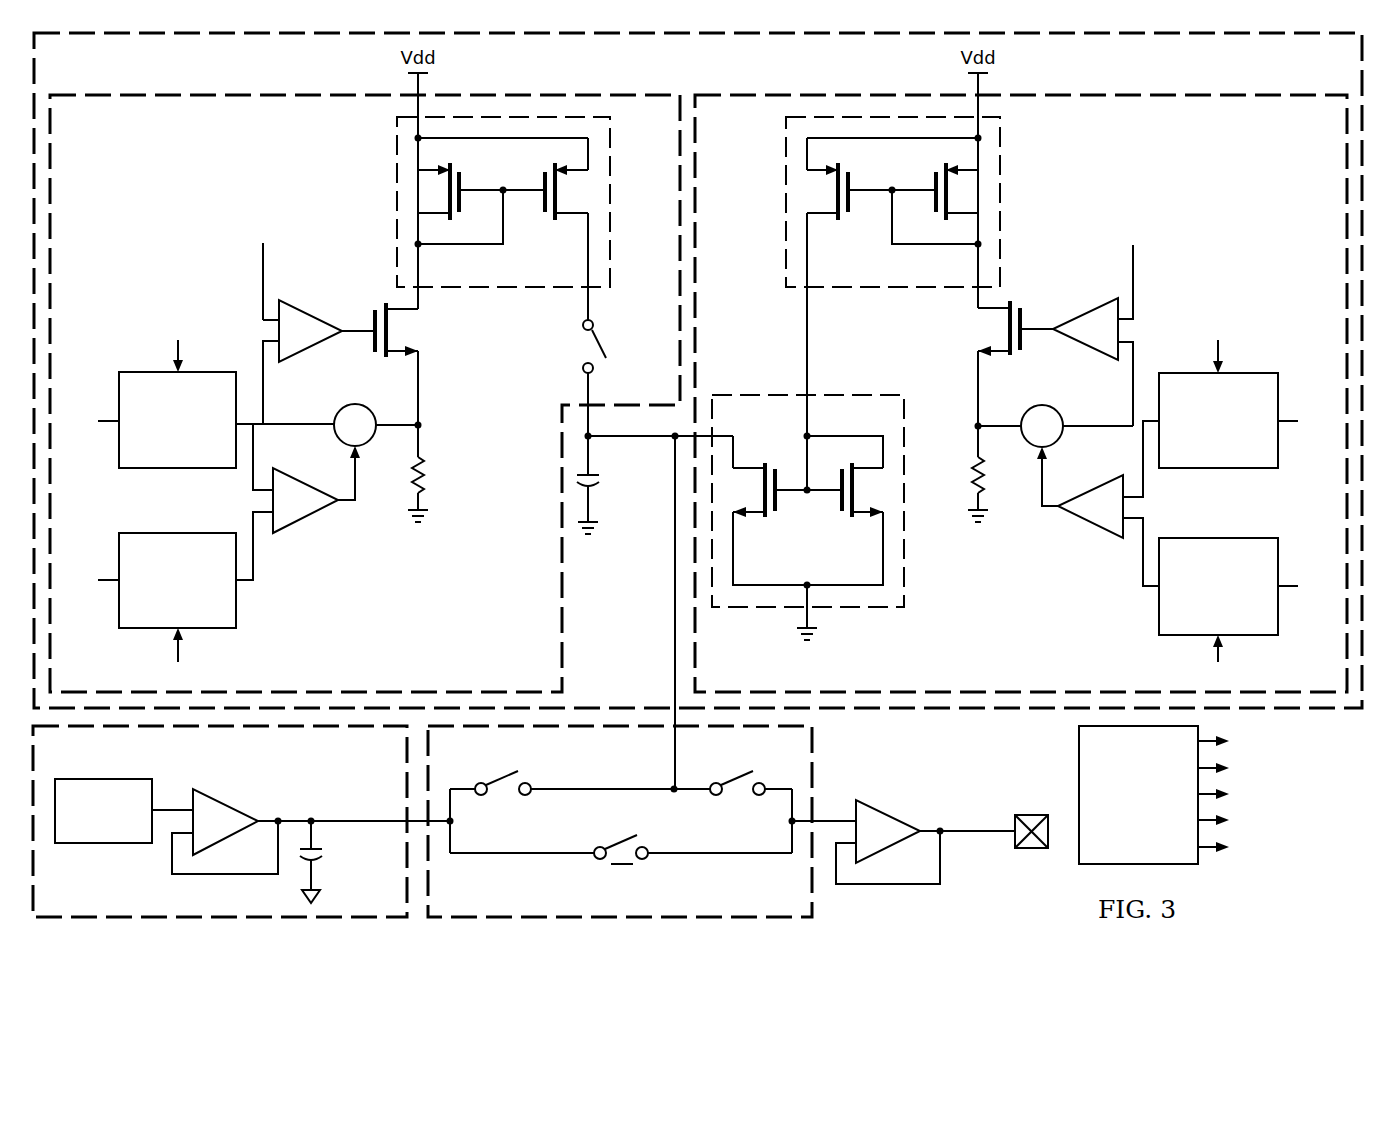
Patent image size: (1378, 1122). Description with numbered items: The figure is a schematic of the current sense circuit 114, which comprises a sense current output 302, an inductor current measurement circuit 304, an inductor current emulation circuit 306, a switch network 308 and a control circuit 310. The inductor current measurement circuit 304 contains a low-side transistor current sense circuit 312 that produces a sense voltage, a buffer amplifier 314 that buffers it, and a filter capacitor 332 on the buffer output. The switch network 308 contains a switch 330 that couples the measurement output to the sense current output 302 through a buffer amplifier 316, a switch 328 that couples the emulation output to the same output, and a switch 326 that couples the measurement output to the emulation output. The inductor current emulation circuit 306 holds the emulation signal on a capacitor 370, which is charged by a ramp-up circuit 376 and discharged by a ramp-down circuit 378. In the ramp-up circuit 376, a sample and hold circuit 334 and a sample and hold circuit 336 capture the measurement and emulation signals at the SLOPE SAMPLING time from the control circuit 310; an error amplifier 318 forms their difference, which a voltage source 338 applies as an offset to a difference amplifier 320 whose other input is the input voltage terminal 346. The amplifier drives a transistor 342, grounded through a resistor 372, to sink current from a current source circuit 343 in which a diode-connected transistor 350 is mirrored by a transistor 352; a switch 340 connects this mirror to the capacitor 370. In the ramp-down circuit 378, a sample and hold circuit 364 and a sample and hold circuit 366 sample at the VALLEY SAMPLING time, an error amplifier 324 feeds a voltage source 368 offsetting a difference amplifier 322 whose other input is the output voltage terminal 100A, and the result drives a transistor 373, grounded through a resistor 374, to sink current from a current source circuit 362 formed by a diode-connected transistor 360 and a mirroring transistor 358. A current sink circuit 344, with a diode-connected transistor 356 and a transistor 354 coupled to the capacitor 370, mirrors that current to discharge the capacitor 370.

The output voltage terminal 100A is at (1137, 263).
The current sense circuit 114 is at (1330, 877).
The sense current output 302 is at (1033, 812).
The inductor current measurement circuit 304 is at (84, 765).
The inductor current emulation circuit 306 is at (681, 76).
The switch network 308 is at (820, 755).
The control circuit 310 is at (1119, 835).
The low-side transistor current sense circuit 312 is at (105, 845).
The buffer amplifier 314 is at (228, 803).
The buffer amplifier 316 is at (890, 810).
The error amplifier 318 is at (307, 518).
The difference amplifier 320 is at (313, 307).
The difference amplifier 322 is at (1085, 312).
The error amplifier 324 is at (1090, 520).
The switch 326 is at (502, 778).
The switch 328 is at (736, 778).
The switch 330 is at (618, 840).
The filter capacitor 332 is at (325, 852).
The sample and hold circuit 334 is at (162, 470).
The sample and hold circuit 336 is at (193, 533).
The voltage source 338 is at (338, 404).
The switch 340 is at (602, 336).
The transistor 342 is at (375, 350).
The current source circuit 343 is at (394, 172).
The current sink circuit 344 is at (847, 388).
The input voltage terminal 346 is at (262, 262).
The transistor 350 is at (463, 180).
The transistor 352 is at (540, 215).
The transistor 354 is at (777, 477).
The transistor 356 is at (833, 505).
The transistor 358 is at (860, 210).
The transistor 360 is at (935, 182).
The current source circuit 362 is at (1006, 172).
The sample and hold circuit 364 is at (1202, 470).
The sample and hold circuit 366 is at (1235, 538).
The voltage source 368 is at (1052, 404).
The capacitor 370 is at (600, 487).
The resistor 372 is at (428, 470).
The transistor 373 is at (1030, 350).
The resistor 374 is at (972, 468).
The ramp-up circuit 376 is at (160, 170).
The ramp-down circuit 378 is at (1257, 166).